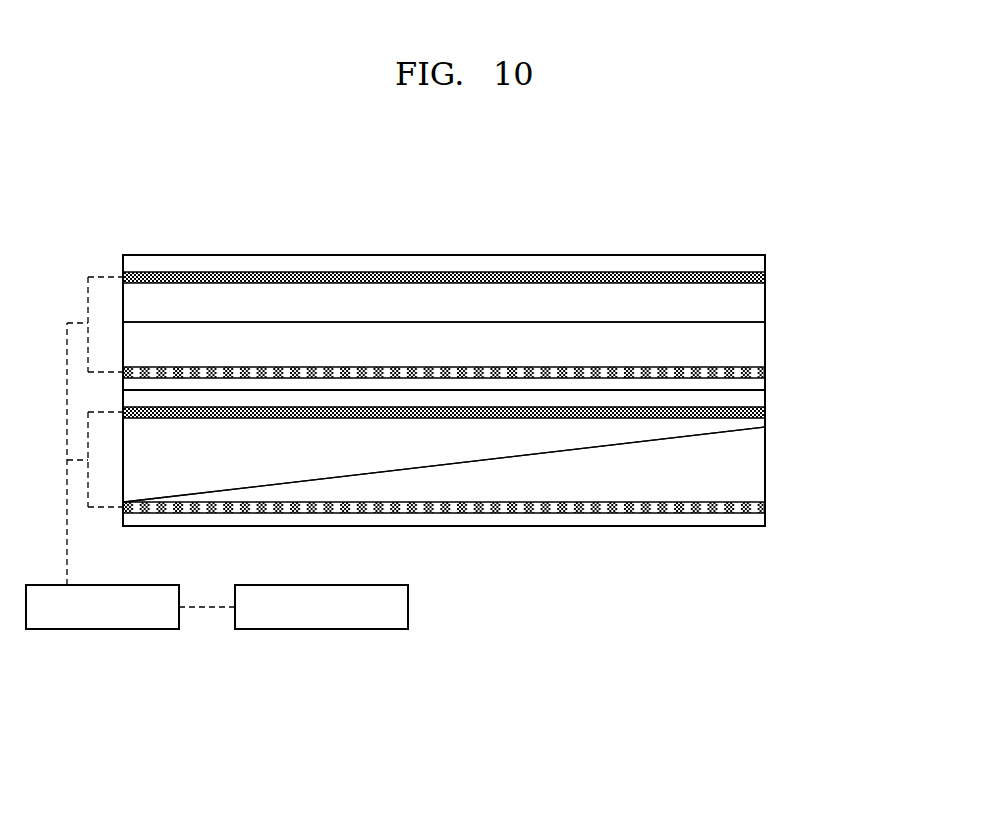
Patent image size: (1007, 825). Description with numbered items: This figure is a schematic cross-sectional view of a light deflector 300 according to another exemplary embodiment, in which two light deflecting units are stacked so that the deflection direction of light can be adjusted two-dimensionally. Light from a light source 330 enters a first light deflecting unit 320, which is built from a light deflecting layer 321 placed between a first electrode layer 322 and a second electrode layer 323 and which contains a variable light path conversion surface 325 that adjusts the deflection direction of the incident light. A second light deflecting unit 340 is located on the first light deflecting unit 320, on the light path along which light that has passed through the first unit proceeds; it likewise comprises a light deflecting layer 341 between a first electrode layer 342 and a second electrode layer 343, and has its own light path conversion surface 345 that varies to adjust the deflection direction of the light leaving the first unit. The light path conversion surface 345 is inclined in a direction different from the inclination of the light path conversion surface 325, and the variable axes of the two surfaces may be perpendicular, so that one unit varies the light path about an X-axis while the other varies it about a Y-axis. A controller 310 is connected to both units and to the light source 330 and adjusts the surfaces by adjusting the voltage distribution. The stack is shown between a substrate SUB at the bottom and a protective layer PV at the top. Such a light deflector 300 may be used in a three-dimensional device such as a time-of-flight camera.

The light deflector 300 is at (826, 180).
The controller 310 is at (100, 630).
The first light deflecting unit 320 is at (506, 490).
The light deflecting layer 321 is at (760, 463).
The first electrode layer 322 is at (765, 507).
The second electrode layer 323 is at (765, 413).
The light path conversion surface 325 is at (534, 455).
The light source 330 is at (322, 630).
The second light deflecting unit 340 is at (506, 293).
The light deflecting layer 341 is at (760, 322).
The first electrode layer 342 is at (765, 373).
The second electrode layer 343 is at (765, 277).
The light path conversion surface 345 is at (575, 322).
The protective layer PV is at (765, 262).
The substrate SUB is at (760, 520).